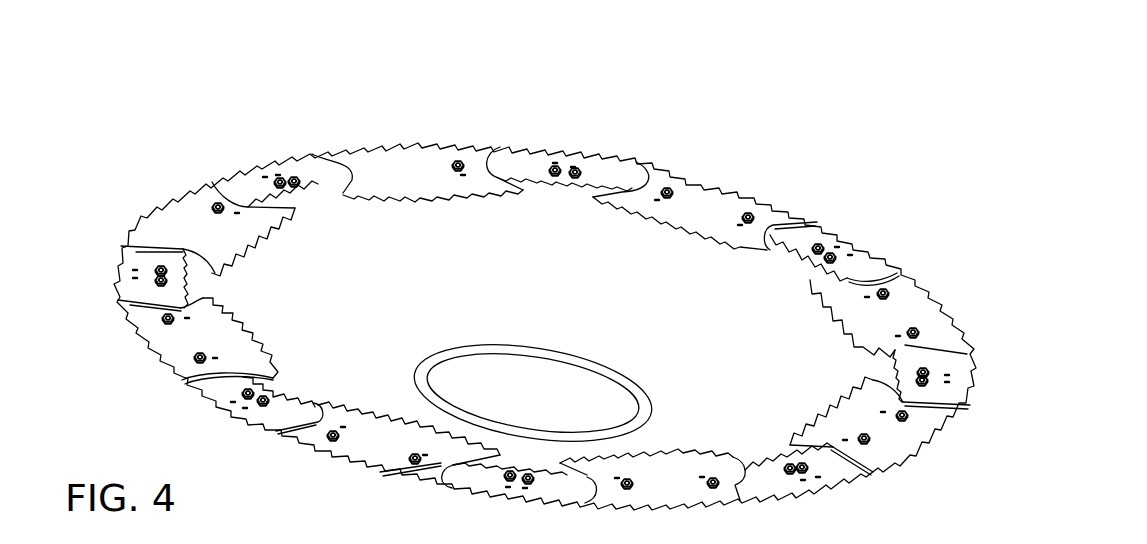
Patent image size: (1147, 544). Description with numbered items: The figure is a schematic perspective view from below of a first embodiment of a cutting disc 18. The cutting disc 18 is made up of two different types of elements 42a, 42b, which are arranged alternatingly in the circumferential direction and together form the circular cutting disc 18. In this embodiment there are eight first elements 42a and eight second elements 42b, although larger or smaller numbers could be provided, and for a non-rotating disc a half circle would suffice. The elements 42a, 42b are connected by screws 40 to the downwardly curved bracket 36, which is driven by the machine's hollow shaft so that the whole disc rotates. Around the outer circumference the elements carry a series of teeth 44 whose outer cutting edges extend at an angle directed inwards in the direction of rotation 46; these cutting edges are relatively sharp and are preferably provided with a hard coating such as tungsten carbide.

The cutting disc 18 is at (567, 122).
The bracket 36 is at (640, 302).
The screws 40 is at (868, 437).
The first elements 42a is at (863, 262).
The second elements 42b is at (903, 307).
The teeth 44 is at (416, 145).
The direction of rotation 46 is at (805, 348).